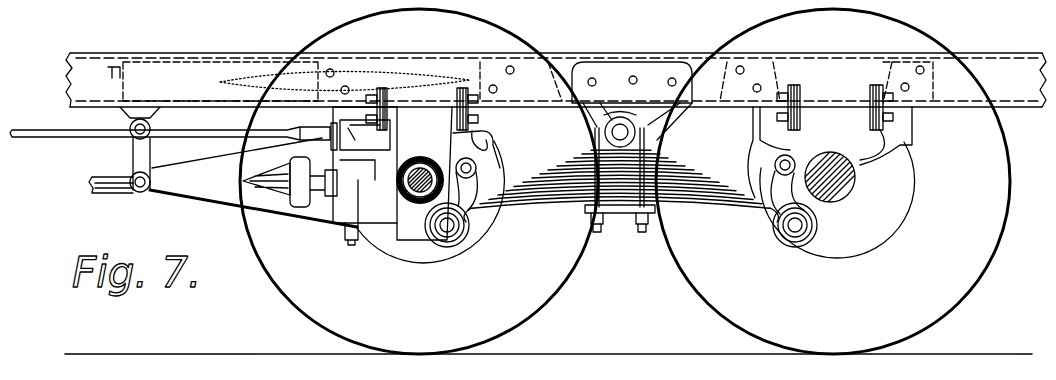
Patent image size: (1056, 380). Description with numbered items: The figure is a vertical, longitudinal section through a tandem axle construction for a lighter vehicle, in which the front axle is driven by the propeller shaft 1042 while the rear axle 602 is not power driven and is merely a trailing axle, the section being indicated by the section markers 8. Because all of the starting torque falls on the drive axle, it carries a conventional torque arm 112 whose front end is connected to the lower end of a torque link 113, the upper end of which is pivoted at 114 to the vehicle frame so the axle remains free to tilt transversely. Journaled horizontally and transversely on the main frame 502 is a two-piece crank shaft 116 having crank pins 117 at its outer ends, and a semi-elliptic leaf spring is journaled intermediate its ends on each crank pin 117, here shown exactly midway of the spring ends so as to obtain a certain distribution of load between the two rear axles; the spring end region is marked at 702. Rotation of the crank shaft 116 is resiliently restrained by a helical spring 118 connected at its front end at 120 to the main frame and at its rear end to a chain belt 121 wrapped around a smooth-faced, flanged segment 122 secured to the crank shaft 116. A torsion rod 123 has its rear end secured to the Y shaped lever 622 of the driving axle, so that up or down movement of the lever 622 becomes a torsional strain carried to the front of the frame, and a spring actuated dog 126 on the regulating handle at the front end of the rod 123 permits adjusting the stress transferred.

The section line 8- 8 is at (125, 118).
The torque arm 112 is at (190, 202).
The torque link 113 is at (133, 160).
The pivot 114 is at (131, 138).
The two-piece crank shaft 116 is at (660, 121).
The crank pin 117 is at (586, 125).
The helical spring 118 is at (434, 37).
The front end connection of helical spring 120 is at (68, 76).
The chain belt 121 is at (548, 58).
The smooth-faced flanged segment 122 is at (655, 140).
The torsion rod 123 is at (22, 139).
The spring actuated dog 126 is at (132, 0).
The main frame 502 is at (98, 52).
The rear axle 602 is at (842, 193).
The Y shaped lever 622 is at (516, 150).
The spring end 702 is at (745, 165).
The propeller shaft 1042 is at (100, 196).